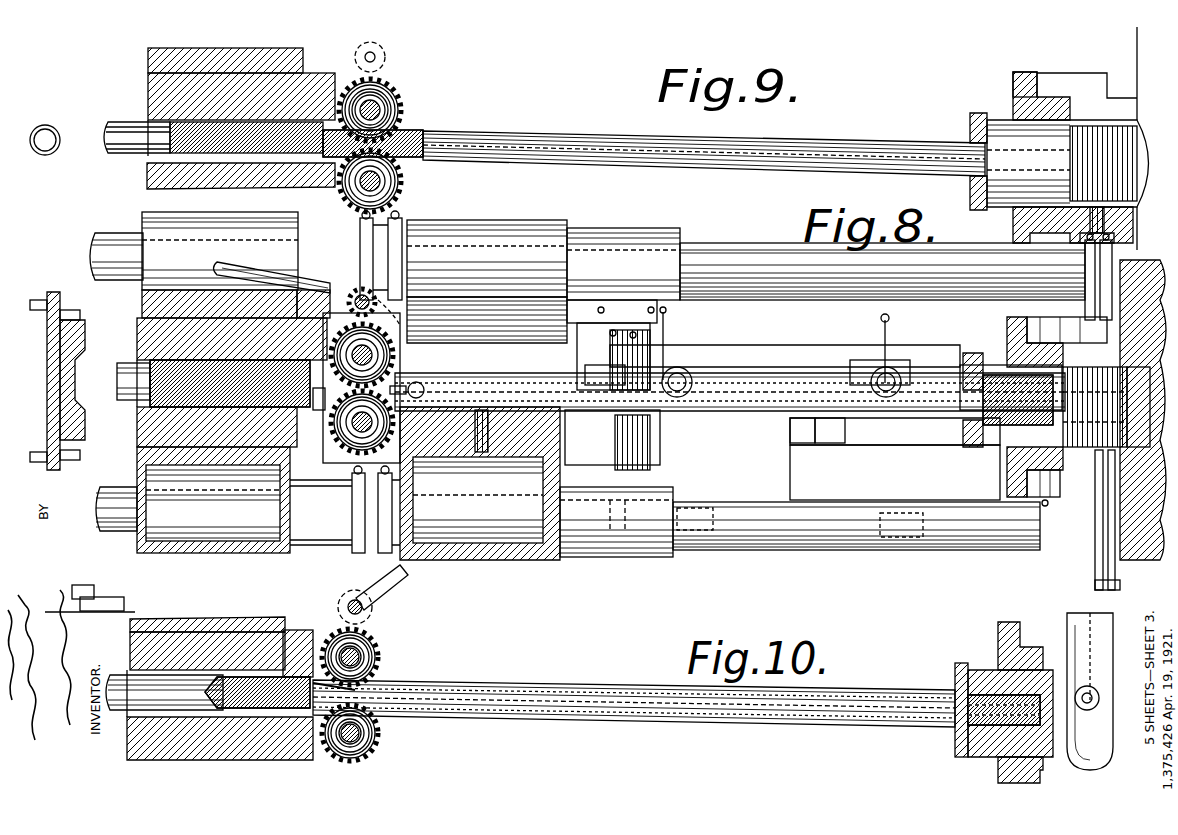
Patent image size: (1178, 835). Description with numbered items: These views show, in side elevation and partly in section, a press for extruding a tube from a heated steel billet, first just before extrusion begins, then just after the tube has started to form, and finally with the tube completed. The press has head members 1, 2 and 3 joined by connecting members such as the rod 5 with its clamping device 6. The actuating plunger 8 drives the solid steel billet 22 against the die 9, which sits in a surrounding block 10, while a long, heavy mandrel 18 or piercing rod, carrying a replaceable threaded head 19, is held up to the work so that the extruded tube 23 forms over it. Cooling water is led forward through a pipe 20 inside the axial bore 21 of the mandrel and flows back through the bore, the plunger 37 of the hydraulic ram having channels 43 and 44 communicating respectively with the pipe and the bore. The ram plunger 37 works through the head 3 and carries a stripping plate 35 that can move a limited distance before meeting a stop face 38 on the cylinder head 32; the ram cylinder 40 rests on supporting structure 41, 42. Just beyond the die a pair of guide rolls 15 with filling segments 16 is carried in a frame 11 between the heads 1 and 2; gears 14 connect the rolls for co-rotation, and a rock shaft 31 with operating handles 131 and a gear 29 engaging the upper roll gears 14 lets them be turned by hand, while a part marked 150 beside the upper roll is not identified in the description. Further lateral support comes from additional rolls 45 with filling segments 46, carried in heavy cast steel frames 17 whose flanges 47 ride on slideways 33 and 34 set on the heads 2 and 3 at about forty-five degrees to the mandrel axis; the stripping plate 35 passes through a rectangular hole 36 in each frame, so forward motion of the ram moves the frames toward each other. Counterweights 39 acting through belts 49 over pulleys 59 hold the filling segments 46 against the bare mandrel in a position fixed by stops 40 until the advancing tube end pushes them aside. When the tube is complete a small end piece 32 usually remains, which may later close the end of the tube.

In FIG. 9, the head member 1 is at (254, 60).
In FIG. 8, the head member 1 is at (150, 222).
In FIG. 10, the head member 1 is at (237, 620).
In FIG. 8, the head member 2 is at (525, 232).
In FIG. 9, the head member 3 is at (1133, 50).
In FIG. 8, the head member 3 is at (1143, 322).
In FIG. 8, the connecting rod 5 is at (706, 256).
In FIG. 8, the clamping device 6 is at (362, 232).
In FIG. 9, the actuating plunger 8 is at (121, 134).
In FIG. 8, the actuating plunger 8 is at (129, 370).
In FIG. 10, the actuating plunger 8 is at (120, 678).
In FIG. 9, the die 9 is at (146, 121).
In FIG. 8, the die 9 is at (137, 404).
In FIG. 10, the die 9 is at (140, 705).
In FIG. 9, the block 10 is at (282, 92).
In FIG. 10, the block 10 is at (183, 640).
In FIG. 8, the frame 11 is at (316, 490).
In FIG. 8, the gears 14 is at (348, 336).
In FIG. 10, the gears 14 is at (375, 645).
In FIG. 9, the guide rolls 15 is at (385, 95).
In FIG. 8, the guide rolls 15 is at (332, 343).
In FIG. 10, the guide rolls 15 is at (340, 640).
In FIG. 9, the filling segments 16 is at (398, 109).
In FIG. 8, the filling segments 16 is at (335, 356).
In FIG. 10, the filling segments 16 is at (378, 658).
In FIG. 8, the separating frames 17 is at (765, 366).
In FIG. 9, the mandrel 18 is at (497, 140).
In FIG. 8, the mandrel 18 is at (738, 372).
In FIG. 10, the mandrel 18 is at (575, 690).
In FIG. 8, the replaceable head 19 is at (313, 403).
In FIG. 8, the pipe 20 is at (400, 385).
In FIG. 8, the axial bore 21 is at (424, 384).
In FIG. 9, the billet 22 is at (210, 135).
In FIG. 8, the billet 22 is at (140, 413).
In FIG. 10, the billet 22 is at (257, 692).
In FIG. 9, the extruded tube 23 is at (344, 124).
In FIG. 10, the extruded tube 23 is at (487, 690).
In FIG. 9, the gear 29 is at (386, 56).
In FIG. 8, the gear 29 is at (400, 326).
In FIG. 10, the gear 29 is at (375, 618).
In FIG. 9, the rock shaft 31 is at (373, 53).
In FIG. 10, the rock shaft 31 is at (355, 600).
In FIG. 9, the cylinder head 32 is at (1025, 72).
In FIG. 8, the cylinder head 32 is at (1020, 492).
In FIG. 10, the cylinder head 32 is at (300, 650).
In FIG. 8, the slideway 33 is at (574, 338).
In FIG. 8, the slideway 34 is at (1037, 330).
In FIG. 9, the stripping plate 35 is at (970, 124).
In FIG. 8, the stripping plate 35 is at (965, 355).
In FIG. 10, the stripping plate 35 is at (955, 690).
In FIG. 8, the rectangular hole 36 is at (963, 386).
In FIG. 9, the ram plunger 37 is at (1068, 181).
In FIG. 8, the ram plunger 37 is at (1138, 407).
In FIG. 10, the ram plunger 37 is at (987, 757).
In FIG. 9, the stop face 38 is at (1013, 104).
In FIG. 8, the stop face 38 is at (1007, 348).
In FIG. 10, the stop face 38 is at (998, 640).
In FIG. 8, the counterweight 39 is at (880, 521).
In FIG. 9, the cylinder 40 is at (1090, 226).
In FIG. 8, the cylinder 40 is at (884, 330).
In FIG. 10, the cylinder 40 is at (1035, 770).
In FIG. 10, the supporting structure 41 is at (1075, 640).
In FIG. 8, the supporting structure 42 is at (1095, 586).
In FIG. 8, the channel 43 is at (1095, 414).
In FIG. 8, the channel 44 is at (1095, 407).
In FIG. 8, the additional rolls 45 is at (585, 370).
In FIG. 8, the filling segments 46 is at (660, 356).
In FIG. 8, the flanges 47 is at (618, 300).
In FIG. 8, the belts 49 is at (858, 368).
In FIG. 8, the pulleys 59 is at (692, 372).
In FIG. 8, the operating handles 131 is at (218, 266).
In FIG. 10, the operating handles 131 is at (400, 588).
In FIG. 9, the spring 150 is at (400, 98).